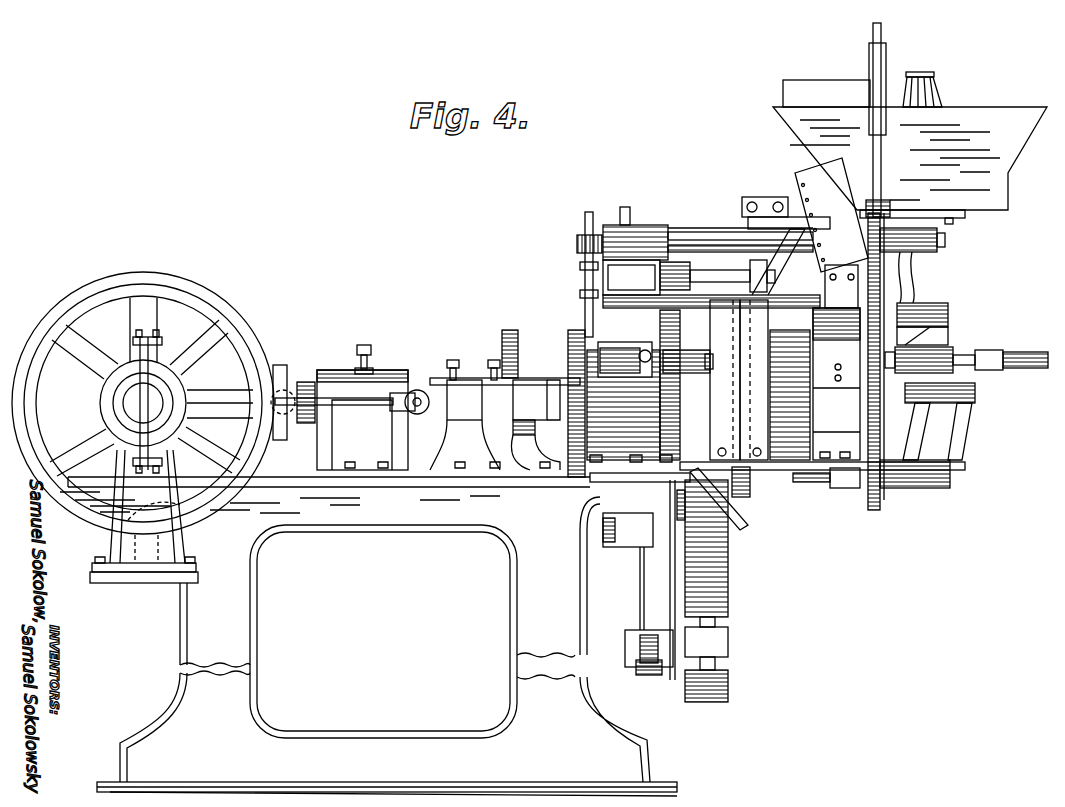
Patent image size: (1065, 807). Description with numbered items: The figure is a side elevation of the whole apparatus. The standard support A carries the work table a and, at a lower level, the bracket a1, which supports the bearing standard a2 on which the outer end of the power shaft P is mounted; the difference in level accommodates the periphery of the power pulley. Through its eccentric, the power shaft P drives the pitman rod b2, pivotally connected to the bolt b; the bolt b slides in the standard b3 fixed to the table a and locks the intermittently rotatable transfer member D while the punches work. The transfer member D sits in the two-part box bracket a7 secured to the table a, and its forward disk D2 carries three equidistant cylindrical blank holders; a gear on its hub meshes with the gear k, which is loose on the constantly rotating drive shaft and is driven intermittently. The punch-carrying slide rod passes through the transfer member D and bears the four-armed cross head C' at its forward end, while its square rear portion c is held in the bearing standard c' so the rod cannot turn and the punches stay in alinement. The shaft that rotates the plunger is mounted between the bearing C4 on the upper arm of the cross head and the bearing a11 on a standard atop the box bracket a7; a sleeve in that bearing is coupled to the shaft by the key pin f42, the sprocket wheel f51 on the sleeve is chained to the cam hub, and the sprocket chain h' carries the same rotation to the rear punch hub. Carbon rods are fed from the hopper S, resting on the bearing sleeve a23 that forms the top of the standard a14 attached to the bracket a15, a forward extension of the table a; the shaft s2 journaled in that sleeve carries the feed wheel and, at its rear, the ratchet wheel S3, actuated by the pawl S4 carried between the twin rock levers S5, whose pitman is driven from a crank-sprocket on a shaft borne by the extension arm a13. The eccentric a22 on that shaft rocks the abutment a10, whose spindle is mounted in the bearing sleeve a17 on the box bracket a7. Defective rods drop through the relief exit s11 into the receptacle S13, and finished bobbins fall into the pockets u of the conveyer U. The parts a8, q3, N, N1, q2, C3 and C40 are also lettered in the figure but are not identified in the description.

The standard support A is at (387, 646).
The work table a is at (393, 477).
The power shaft P is at (143, 403).
The bolt b is at (228, 328).
The pitman rod b2 is at (395, 357).
The standard b3 is at (469, 415).
The rear portion of slide rod c is at (328, 355).
The bearing standard c' is at (362, 420).
The gear k is at (500, 348).
The bracket a8 is at (520, 438).
The intermittent transfer rotor D is at (548, 352).
The box bracket a7 is at (650, 420).
The shaft s2 is at (625, 357).
The bearing sleeve a17 is at (625, 360).
The abutment a10 is at (688, 361).
The standard a14 is at (760, 380).
The relief exit s11 is at (852, 330).
The bearing a11 is at (708, 242).
The sprocket wheel f51 is at (586, 213).
The key pin f42 is at (619, 200).
The eccentric a22 is at (716, 252).
The bearing sleeve a23 is at (717, 285).
The twin rock levers S5 is at (585, 266).
The pawl S4 is at (600, 280).
The ratchet wheel S3 is at (598, 312).
The extension arm a13 is at (590, 312).
The hopper S is at (831, 233).
The hopper gate lever q3 is at (870, 145).
The hopper N is at (910, 152).
The funnel N1 is at (935, 90).
The gate rod q2 is at (886, 33).
The sprocket chain h' is at (921, 361).
The bearing C4 is at (920, 252).
The block C3 is at (948, 318).
The shaft C40 is at (966, 360).
The four armed cross head C' is at (941, 407).
The bracket a15 is at (782, 483).
The receptacle S13 is at (843, 462).
The forward disk D2 is at (745, 525).
The pockets u is at (709, 548).
The conveyer U is at (714, 605).
The bearing standard a2 is at (155, 525).
The bracket a1 is at (120, 583).